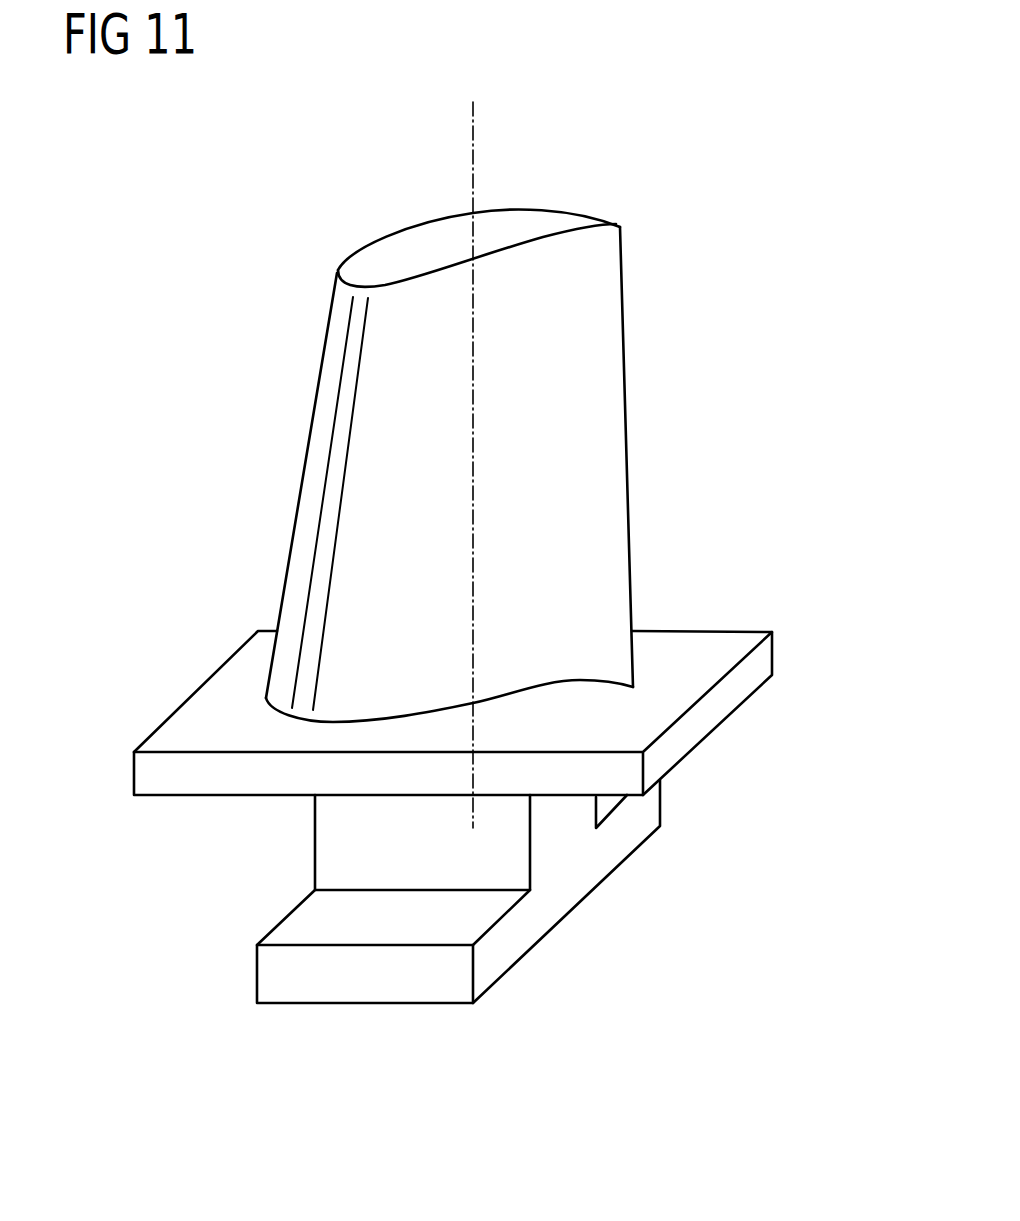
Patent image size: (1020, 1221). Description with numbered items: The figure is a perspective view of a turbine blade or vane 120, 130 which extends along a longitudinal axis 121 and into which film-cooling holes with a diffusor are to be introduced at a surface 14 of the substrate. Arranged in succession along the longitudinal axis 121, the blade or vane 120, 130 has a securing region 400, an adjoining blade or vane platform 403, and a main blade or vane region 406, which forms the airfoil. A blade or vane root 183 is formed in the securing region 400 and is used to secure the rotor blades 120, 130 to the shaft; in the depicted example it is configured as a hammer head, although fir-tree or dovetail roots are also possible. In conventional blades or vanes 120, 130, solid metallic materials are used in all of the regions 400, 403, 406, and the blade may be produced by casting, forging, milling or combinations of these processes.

The rotor blade 120 is at (467, 551).
The vane 130 is at (262, 312).
The longitudinal axis 121 is at (475, 135).
The surface 14 is at (560, 278).
The main blade or vane region 406 is at (340, 457).
The blade or vane platform 403 is at (762, 656).
The securing region 400 is at (577, 870).
The blade or vane root 183 is at (300, 927).